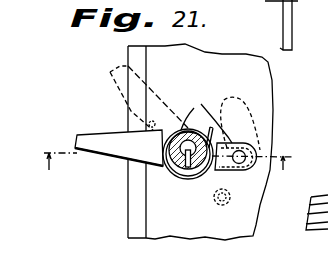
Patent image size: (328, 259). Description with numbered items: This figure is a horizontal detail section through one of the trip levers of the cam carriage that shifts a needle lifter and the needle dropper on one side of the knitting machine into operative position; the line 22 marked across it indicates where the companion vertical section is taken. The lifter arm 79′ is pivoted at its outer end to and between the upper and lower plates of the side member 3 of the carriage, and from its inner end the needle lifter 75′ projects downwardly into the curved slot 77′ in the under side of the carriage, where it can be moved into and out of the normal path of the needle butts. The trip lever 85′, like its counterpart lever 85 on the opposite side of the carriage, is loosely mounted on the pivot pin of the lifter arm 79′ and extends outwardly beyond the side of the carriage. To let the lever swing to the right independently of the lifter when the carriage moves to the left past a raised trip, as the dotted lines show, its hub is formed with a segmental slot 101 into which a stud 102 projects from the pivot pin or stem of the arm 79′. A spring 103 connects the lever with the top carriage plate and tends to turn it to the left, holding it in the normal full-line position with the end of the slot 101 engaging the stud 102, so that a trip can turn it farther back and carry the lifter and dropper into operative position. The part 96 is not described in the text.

The side member 3 is at (200, 142).
The bracket 96 is at (262, 25).
The spring 103 is at (168, 172).
The trip lever 85′ is at (119, 148).
The trip lever 85 is at (193, 128).
The stud 102 is at (203, 163).
The lifter arm 79′ is at (188, 165).
The segmental slot 101 is at (228, 192).
The needle lifter 75′ is at (259, 157).
The curved slot 77′ is at (251, 116).
The section line 22 is at (167, 158).